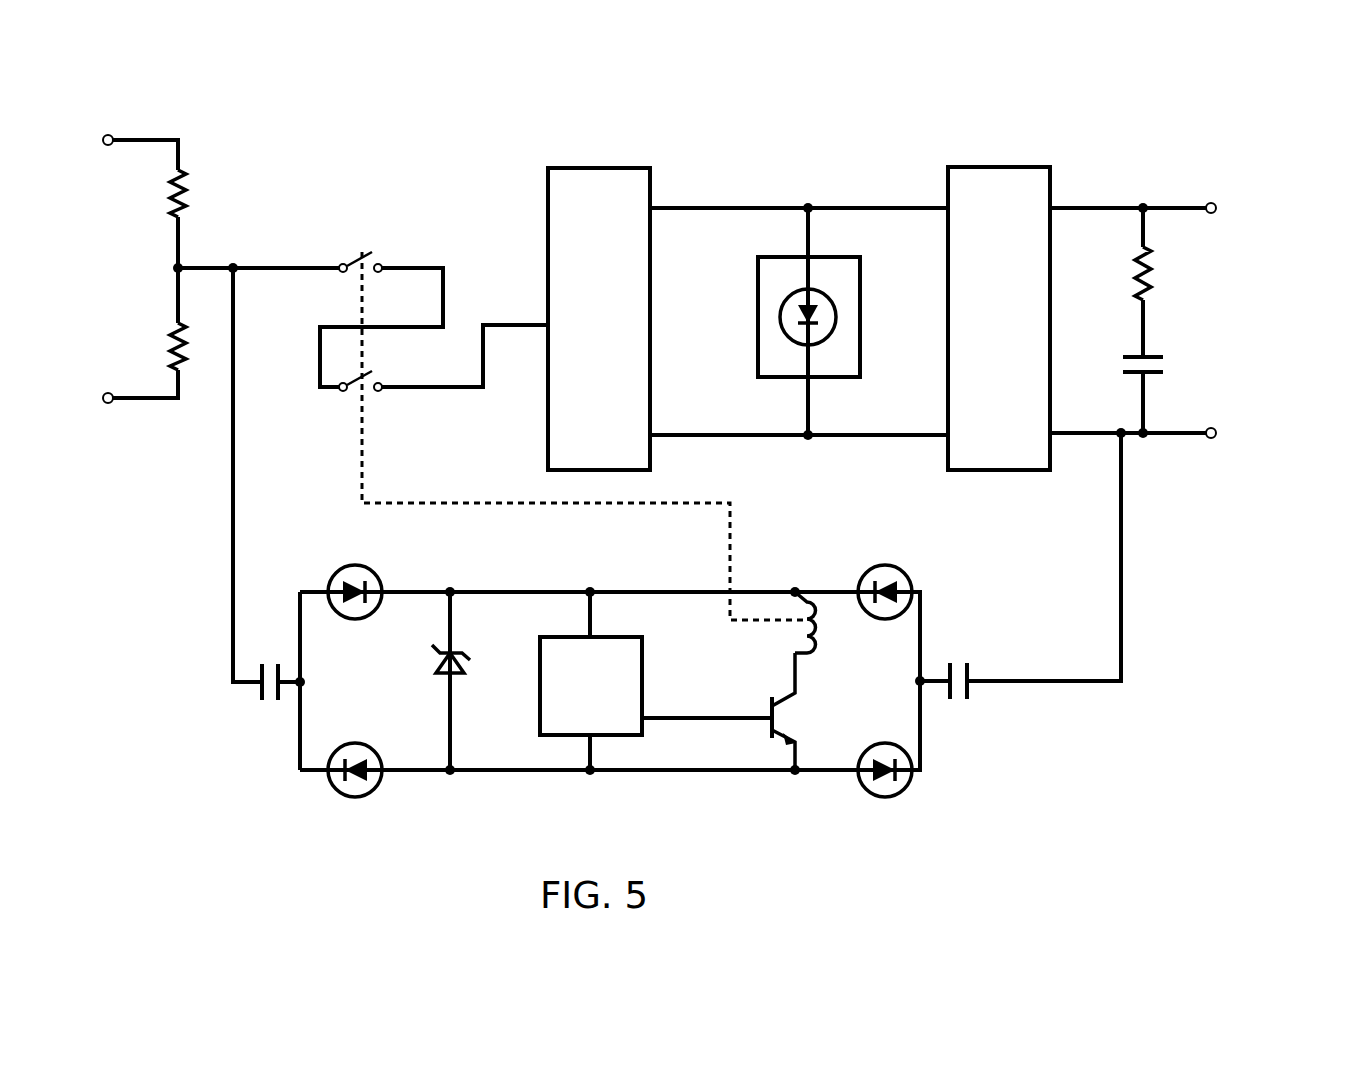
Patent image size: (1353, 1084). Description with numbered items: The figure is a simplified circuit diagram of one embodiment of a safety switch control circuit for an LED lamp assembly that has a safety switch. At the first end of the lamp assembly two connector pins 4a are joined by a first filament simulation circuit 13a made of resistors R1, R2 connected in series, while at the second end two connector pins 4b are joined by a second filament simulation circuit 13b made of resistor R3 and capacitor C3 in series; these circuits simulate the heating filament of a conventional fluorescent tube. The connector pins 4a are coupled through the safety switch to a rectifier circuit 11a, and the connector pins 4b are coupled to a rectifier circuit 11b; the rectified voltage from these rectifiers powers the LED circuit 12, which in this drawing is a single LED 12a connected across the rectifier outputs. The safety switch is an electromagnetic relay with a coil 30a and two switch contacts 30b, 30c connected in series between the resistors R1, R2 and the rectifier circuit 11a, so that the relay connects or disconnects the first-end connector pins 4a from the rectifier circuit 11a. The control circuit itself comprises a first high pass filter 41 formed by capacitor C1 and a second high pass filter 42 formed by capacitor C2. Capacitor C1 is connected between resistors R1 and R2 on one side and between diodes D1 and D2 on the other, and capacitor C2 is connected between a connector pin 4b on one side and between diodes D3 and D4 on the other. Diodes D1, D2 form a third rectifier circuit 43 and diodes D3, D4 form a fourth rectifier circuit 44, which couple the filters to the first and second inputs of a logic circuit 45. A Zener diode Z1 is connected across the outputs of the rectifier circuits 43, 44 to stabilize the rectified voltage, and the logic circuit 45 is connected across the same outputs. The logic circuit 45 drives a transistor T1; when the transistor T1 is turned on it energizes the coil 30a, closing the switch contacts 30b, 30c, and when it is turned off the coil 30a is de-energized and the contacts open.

The connector pins 4a is at (128, 138).
The first filament simulation circuit 13a is at (250, 162).
The resistor R1 is at (168, 194).
The resistor R2 is at (168, 352).
The switch contact 30b is at (365, 252).
The switch contact 30c is at (343, 393).
The rectifier circuit 11a is at (548, 170).
The rectifier circuit 11b is at (948, 177).
The LED circuit 12 is at (757, 317).
The LED 12a is at (836, 306).
The connector pins 4b is at (1183, 205).
The second filament simulation circuit 13b is at (1256, 212).
The resistor R3 is at (1153, 267).
The capacitor C3 is at (1162, 357).
The diode D1 is at (378, 587).
The diode D2 is at (383, 787).
The diode D3 is at (910, 567).
The diode D4 is at (910, 788).
The Zener diode Z1 is at (460, 663).
The logic circuit 45 is at (591, 686).
The transistor T1 is at (772, 698).
The coil 30a is at (820, 635).
The capacitor C1 is at (262, 700).
The capacitor C2 is at (968, 687).
The first high pass filter 41 is at (232, 794).
The second high pass filter 42 is at (1045, 756).
The third rectifier circuit 43 is at (325, 838).
The fourth rectifier circuit 44 is at (980, 841).